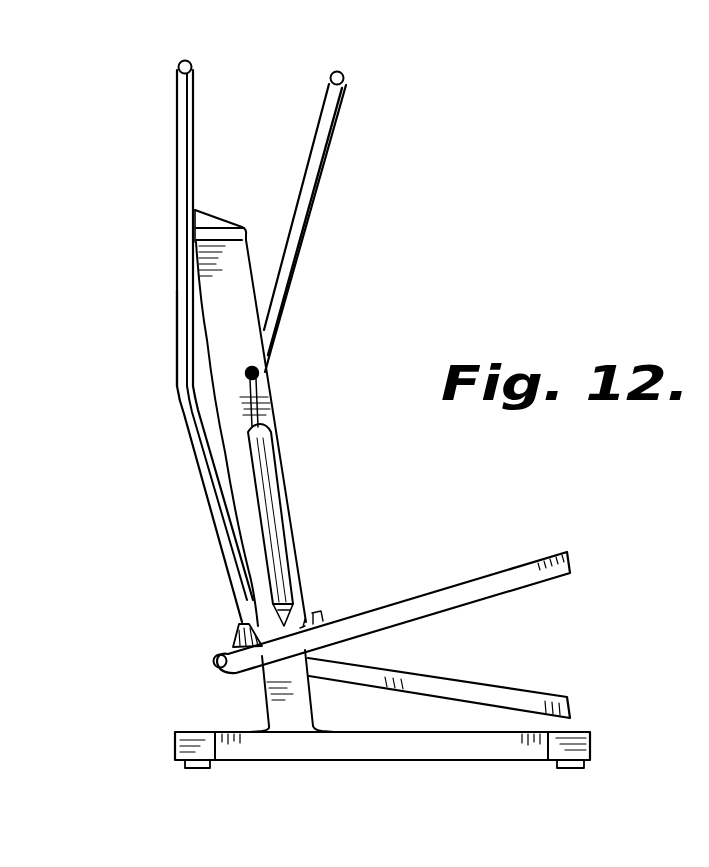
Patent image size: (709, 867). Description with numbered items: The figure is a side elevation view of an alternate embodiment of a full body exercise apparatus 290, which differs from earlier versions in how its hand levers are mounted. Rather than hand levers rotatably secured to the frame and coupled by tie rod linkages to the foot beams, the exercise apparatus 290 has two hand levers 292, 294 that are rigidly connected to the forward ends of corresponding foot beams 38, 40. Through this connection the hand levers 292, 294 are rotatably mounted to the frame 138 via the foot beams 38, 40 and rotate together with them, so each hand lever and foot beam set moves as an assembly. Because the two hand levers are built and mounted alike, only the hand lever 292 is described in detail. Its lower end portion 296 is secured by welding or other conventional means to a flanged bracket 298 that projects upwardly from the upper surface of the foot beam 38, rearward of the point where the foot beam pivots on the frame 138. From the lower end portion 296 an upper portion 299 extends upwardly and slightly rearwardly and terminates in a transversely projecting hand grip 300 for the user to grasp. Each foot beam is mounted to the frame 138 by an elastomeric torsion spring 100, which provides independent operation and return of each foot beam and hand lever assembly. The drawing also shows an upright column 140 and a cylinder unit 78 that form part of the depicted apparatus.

The hand grip 300 is at (178, 60).
The hand lever 292 is at (172, 136).
The hand lever 294 is at (334, 156).
The exercise apparatus 290 is at (428, 246).
The upright column 140 is at (210, 277).
The upper portion 299 is at (175, 347).
The hydraulic cylinder 78 is at (256, 479).
The lower end portion 296 is at (212, 548).
The flanged bracket 298 is at (238, 644).
The elastomeric torsion spring 100 is at (210, 661).
The foot beam 38 is at (376, 612).
The foot beam 40 is at (418, 682).
The frame 138 is at (377, 767).